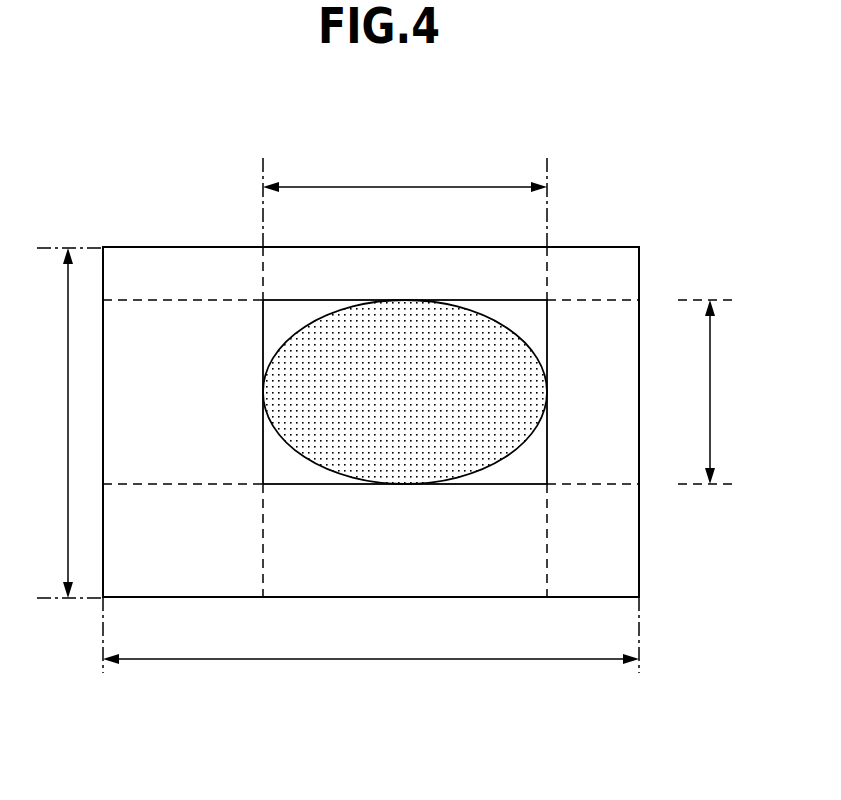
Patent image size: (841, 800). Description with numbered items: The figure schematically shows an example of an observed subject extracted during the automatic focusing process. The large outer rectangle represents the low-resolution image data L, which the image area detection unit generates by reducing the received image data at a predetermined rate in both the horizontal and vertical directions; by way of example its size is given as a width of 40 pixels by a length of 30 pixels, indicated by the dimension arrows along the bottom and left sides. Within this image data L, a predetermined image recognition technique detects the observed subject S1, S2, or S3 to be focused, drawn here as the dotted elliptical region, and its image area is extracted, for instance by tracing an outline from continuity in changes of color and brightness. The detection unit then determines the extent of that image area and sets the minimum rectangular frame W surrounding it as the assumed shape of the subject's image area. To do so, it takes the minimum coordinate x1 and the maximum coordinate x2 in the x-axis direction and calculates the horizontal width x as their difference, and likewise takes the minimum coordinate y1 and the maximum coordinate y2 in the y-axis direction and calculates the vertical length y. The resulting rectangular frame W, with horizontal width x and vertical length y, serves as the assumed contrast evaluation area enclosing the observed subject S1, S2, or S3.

The low-resolution image data L is at (160, 247).
The rectangular frame W is at (478, 300).
The minimum coordinate in the x-axis direction x1 is at (264, 377).
The maximum coordinate in the x-axis direction x2 is at (548, 377).
The minimum coordinate in the y-axis direction y1 is at (689, 485).
The maximum coordinate in the y-axis direction y2 is at (689, 297).
The horizontal width x is at (405, 187).
The vertical length y is at (710, 398).
The length in pixels of the low-resolution image data 30 is at (68, 417).
The width in pixels of the low-resolution image data 40 is at (373, 660).
The observed subject S1 is at (409, 475).
The observed subject S2 is at (405, 392).
The observed subject S3 is at (527, 447).